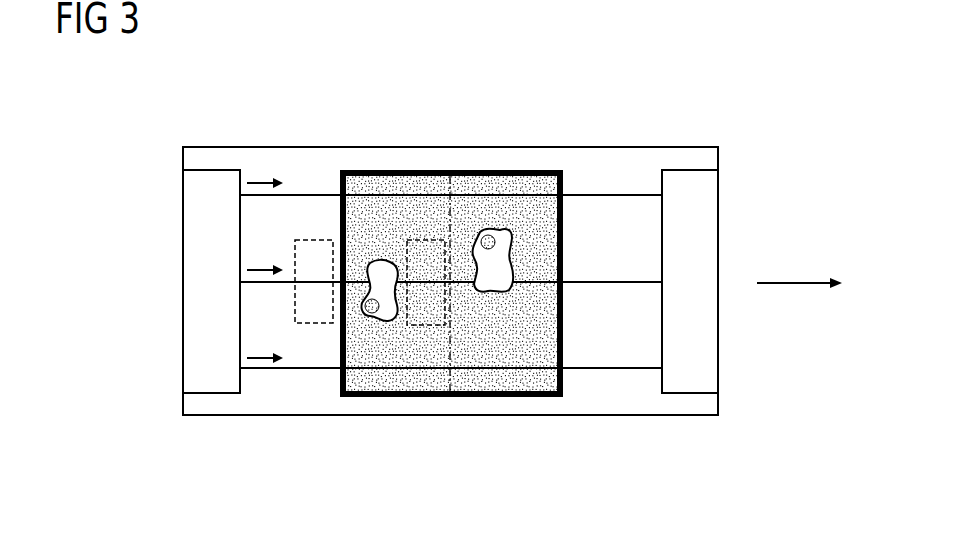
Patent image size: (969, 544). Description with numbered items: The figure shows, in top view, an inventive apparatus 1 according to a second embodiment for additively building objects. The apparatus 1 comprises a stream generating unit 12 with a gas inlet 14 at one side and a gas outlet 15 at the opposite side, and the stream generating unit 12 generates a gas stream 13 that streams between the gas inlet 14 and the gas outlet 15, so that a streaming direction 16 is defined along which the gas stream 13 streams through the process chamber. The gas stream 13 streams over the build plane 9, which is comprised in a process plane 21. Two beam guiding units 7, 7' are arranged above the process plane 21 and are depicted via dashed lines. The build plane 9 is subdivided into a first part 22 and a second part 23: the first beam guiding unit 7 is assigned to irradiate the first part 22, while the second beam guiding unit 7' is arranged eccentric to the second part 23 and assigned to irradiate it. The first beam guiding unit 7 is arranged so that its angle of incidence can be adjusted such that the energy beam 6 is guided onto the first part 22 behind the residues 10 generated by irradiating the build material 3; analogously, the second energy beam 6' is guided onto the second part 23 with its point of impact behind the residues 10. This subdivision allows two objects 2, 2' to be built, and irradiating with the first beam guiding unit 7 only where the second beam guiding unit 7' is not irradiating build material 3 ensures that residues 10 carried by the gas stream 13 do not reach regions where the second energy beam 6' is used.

The apparatus 1 is at (770, 76).
The object 2 is at (395, 370).
The object 2' is at (486, 354).
The build material 3 is at (540, 381).
The energy beam 6 is at (324, 383).
The second energy beam 6' is at (536, 270).
The first beam guiding unit 7 is at (314, 208).
The second beam guiding unit 7' is at (426, 209).
The build plane 9 is at (544, 173).
The residues 10 is at (488, 238).
The stream generating unit 12 is at (216, 139).
The gas stream 13 is at (610, 195).
The gas inlet 14 is at (205, 394).
The gas outlet 15 is at (688, 394).
The streaming direction 16 is at (783, 285).
The process plane 21 is at (339, 169).
The first part 22 is at (385, 182).
The second part 23 is at (529, 181).